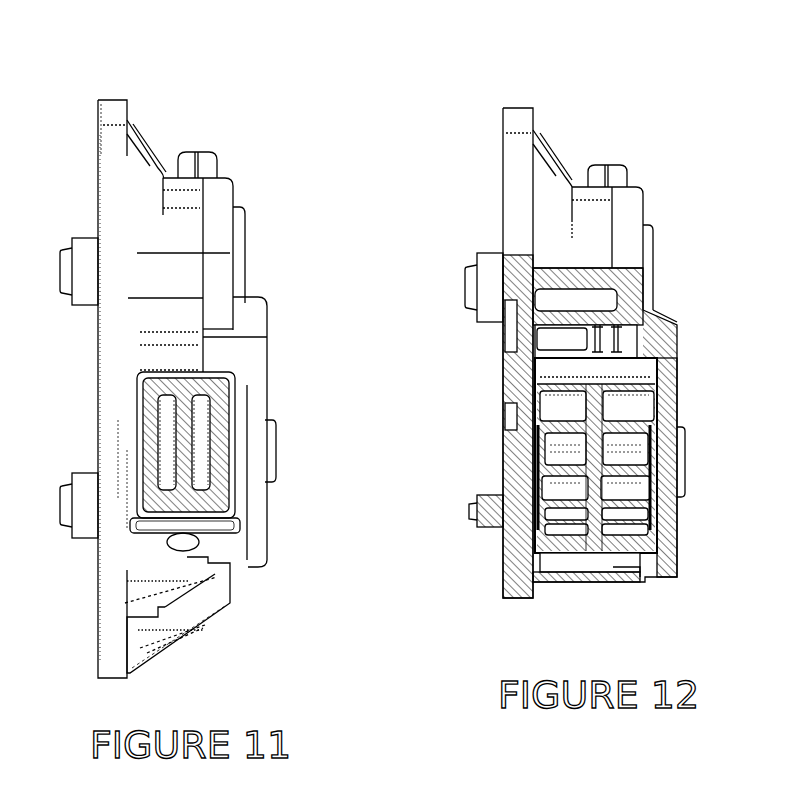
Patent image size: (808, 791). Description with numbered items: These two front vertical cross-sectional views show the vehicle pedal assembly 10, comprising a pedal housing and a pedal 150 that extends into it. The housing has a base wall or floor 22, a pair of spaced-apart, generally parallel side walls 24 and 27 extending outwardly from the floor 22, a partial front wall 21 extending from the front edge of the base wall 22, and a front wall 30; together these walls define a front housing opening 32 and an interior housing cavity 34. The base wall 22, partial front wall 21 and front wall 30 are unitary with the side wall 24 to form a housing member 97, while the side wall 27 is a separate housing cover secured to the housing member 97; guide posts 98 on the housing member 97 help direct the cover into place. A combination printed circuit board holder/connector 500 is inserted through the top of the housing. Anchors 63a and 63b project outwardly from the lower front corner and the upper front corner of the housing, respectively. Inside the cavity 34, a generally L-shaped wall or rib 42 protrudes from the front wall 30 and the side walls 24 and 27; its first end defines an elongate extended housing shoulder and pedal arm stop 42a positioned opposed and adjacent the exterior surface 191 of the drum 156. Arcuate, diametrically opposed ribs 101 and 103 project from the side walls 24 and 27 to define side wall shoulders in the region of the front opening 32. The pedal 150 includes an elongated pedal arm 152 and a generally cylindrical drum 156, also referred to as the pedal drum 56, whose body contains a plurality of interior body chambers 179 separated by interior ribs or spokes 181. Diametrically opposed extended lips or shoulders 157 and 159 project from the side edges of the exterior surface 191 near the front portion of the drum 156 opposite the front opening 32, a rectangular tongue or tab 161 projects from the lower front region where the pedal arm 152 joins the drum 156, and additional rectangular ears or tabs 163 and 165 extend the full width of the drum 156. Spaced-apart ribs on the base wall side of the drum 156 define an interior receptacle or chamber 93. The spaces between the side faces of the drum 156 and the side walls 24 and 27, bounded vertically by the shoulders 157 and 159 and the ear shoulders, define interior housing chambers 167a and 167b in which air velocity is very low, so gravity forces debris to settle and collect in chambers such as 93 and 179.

In FIG. 11, the vehicle pedal assembly 10 is at (310, 168).
In FIG. 12, the vehicle pedal assembly 10 is at (658, 168).
In FIG. 11, the partial front wall 21 is at (185, 608).
In FIG. 12, the base wall 22 is at (587, 583).
In FIG. 11, the housing side wall 24 is at (98, 352).
In FIG. 12, the housing side wall 24 is at (503, 207).
In FIG. 11, the housing side wall 27 is at (273, 508).
In FIG. 12, the housing side wall 27 is at (648, 207).
In FIG. 11, the front wall 30 is at (157, 302).
In FIG. 12, the front wall 30 is at (563, 247).
In FIG. 11, the front housing opening 32 is at (207, 502).
In FIG. 12, the interior housing cavity 34 is at (557, 447).
In FIG. 12, the first partial L-shaped wall or rib 42 is at (622, 362).
In FIG. 11, the extended housing shoulder and pedal arm stop 42a is at (178, 370).
In FIG. 11, the pedal drum 56 is at (138, 503).
In FIG. 11, the anchor 63a is at (92, 650).
In FIG. 11, the anchor 63b is at (110, 95).
In FIG. 12, the anchor 63b is at (517, 105).
In FIG. 12, the interior receptacle or chamber 93 is at (606, 566).
In FIG. 11, the housing member 97 is at (173, 662).
In FIG. 12, the housing member 97 is at (579, 183).
In FIG. 11, the guide posts 98 is at (217, 315).
In FIG. 11, the arcuate wall or rib 101 is at (135, 415).
In FIG. 11, the arcuate wall or rib 103 is at (248, 440).
In FIG. 11, the pedal 150 is at (236, 412).
In FIG. 11, the pedal arm 152 is at (228, 396).
In FIG. 12, the drum 156 is at (615, 458).
In FIG. 12, the extended lip or shoulder 157 is at (535, 388).
In FIG. 12, the extended lip or shoulder 159 is at (663, 372).
In FIG. 11, the tongue or tab 161 is at (168, 508).
In FIG. 12, the ear or tab 163 is at (565, 555).
In FIG. 12, the ear or tab 165 is at (650, 357).
In FIG. 12, the interior housing chamber 167a is at (552, 467).
In FIG. 12, the interior housing chamber 167b is at (637, 467).
In FIG. 12, the interior body chambers 179 is at (635, 447).
In FIG. 12, the interior ribs or spokes 181 is at (637, 486).
In FIG. 12, the exterior arcuate surface 191 is at (563, 380).
In FIG. 12, the combination printed circuit board holder/connector 500 is at (612, 163).